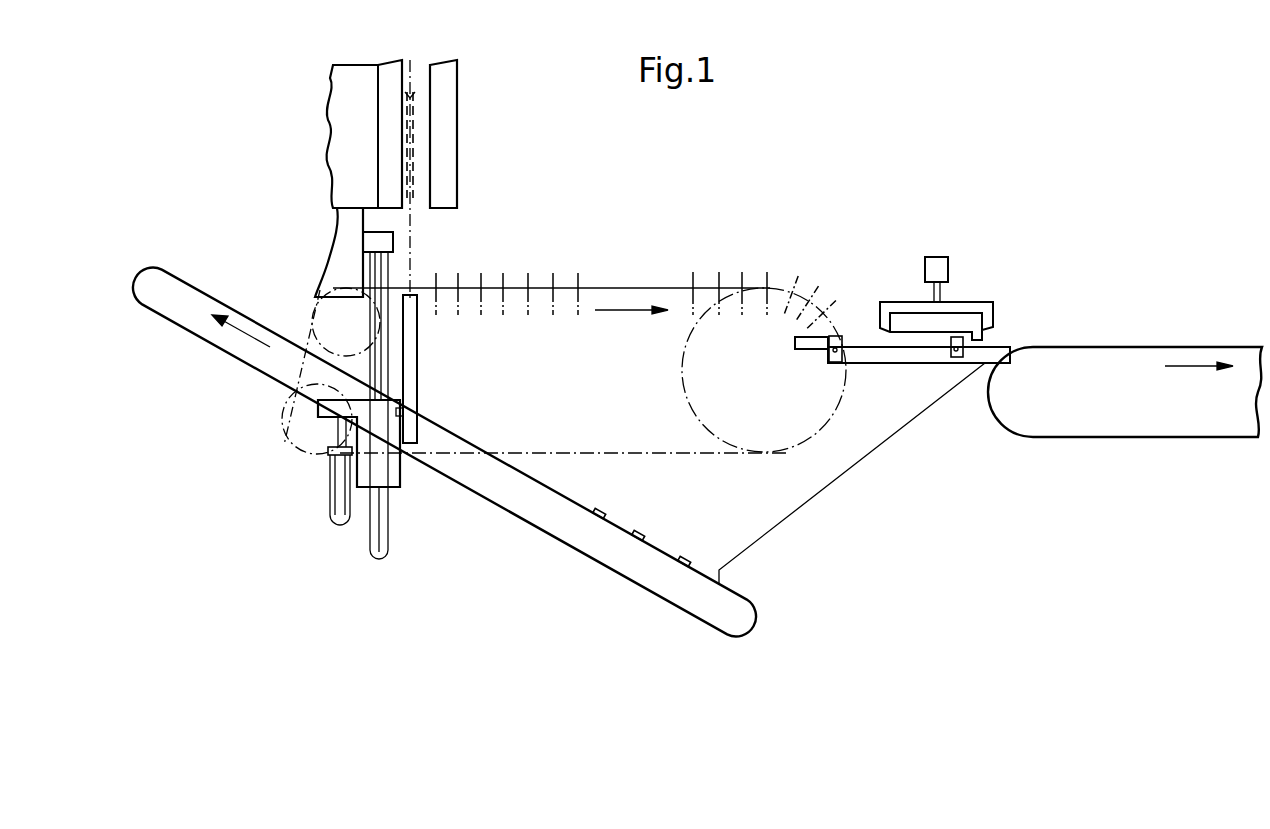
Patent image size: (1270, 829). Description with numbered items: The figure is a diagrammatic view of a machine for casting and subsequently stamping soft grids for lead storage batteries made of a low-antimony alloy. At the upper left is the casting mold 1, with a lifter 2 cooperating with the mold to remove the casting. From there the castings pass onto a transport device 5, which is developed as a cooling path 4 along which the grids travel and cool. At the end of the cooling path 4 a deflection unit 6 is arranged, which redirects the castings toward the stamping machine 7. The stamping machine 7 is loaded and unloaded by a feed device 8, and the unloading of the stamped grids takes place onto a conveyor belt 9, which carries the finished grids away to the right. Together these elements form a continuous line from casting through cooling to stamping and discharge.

The casting mold 1 is at (420, 70).
The lifter 2 is at (415, 118).
The cooling path 4 is at (488, 278).
The transport device 5 is at (602, 288).
The deflection unit 6 is at (770, 318).
The stamping machine 7 is at (955, 310).
The feed device 8 is at (997, 353).
The conveyor belt 9 is at (1095, 373).